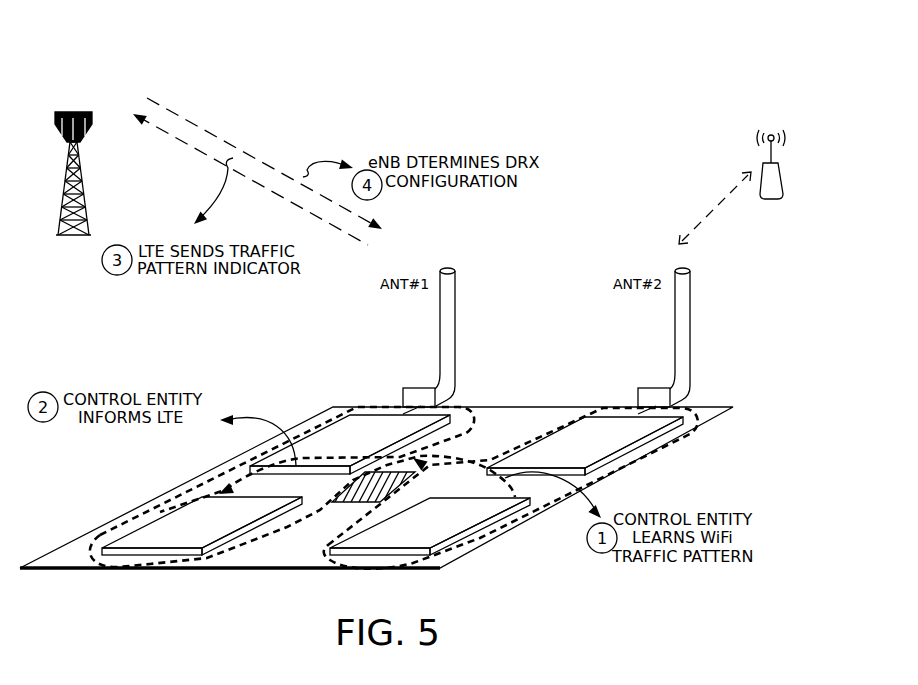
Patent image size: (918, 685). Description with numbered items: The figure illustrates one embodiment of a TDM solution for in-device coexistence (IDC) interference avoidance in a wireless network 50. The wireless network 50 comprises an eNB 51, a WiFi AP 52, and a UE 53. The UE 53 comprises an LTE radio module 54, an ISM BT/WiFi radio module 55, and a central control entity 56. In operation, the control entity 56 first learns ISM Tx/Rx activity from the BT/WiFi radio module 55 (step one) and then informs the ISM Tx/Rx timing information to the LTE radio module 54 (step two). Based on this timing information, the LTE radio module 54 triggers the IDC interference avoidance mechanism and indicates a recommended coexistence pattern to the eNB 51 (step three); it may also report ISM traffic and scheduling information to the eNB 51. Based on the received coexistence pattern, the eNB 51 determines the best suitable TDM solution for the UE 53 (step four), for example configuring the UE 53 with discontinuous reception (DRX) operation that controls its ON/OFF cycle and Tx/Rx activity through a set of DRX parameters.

The wireless network 50 is at (677, 84).
The eNB 51 is at (73, 111).
The WiFi AP 52 is at (772, 133).
The UE 53 is at (72, 540).
The LTE radio module 54 is at (147, 569).
The ISM BT/WiFi radio module 55 is at (375, 569).
The central control entity 56 is at (350, 502).